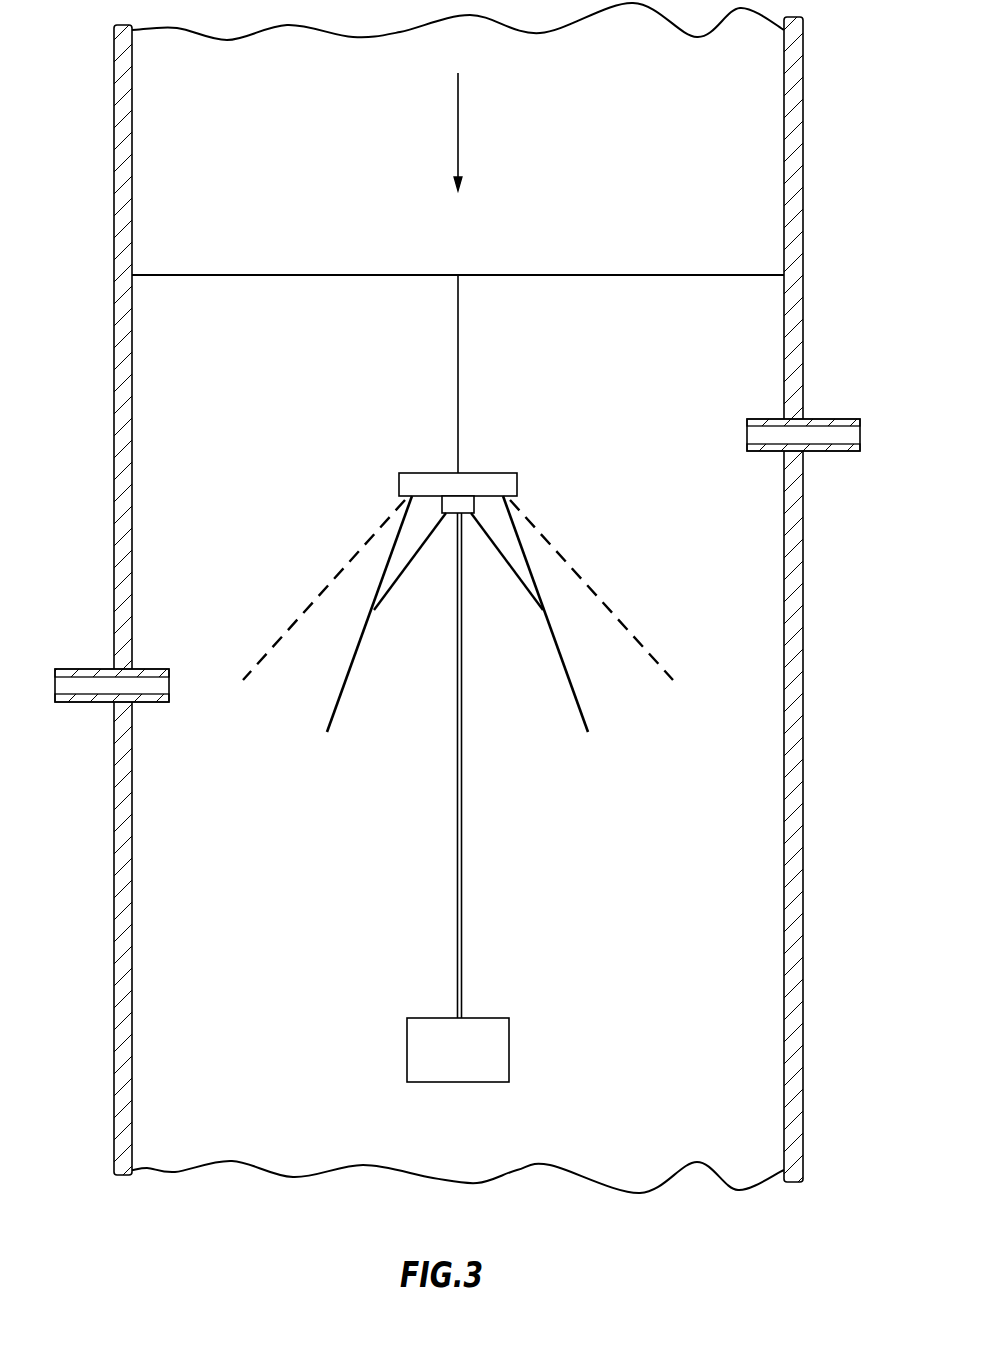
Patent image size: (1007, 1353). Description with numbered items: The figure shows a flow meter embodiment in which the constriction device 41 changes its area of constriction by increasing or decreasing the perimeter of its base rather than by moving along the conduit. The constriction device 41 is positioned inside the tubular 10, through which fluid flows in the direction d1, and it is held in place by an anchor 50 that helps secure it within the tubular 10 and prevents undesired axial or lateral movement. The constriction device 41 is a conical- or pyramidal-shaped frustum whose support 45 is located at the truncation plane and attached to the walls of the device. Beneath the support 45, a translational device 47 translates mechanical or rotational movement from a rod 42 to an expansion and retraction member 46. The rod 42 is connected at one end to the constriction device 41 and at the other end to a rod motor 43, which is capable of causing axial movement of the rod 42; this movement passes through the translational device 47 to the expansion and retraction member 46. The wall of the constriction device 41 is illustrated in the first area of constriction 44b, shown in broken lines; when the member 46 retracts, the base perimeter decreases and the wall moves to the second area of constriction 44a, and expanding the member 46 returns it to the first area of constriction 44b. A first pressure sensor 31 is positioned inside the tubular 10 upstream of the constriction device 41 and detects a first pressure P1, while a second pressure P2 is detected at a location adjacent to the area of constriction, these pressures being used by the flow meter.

The tubular 10 is at (805, 236).
The anchor 50 is at (458, 292).
The first pressure sensor 31 is at (819, 432).
The constriction device 41 is at (477, 585).
The support 45 is at (498, 472).
The translational device 47 is at (475, 506).
The expansion and retraction member 46 is at (520, 583).
The second area of constriction 44a is at (580, 703).
The first area of constriction 44b is at (575, 575).
The rod 42 is at (462, 786).
The rod motor 43 is at (458, 1050).
The direction of fluid flow d1 is at (458, 120).
The first pressure P1 is at (734, 436).
The second pressure P2 is at (183, 687).